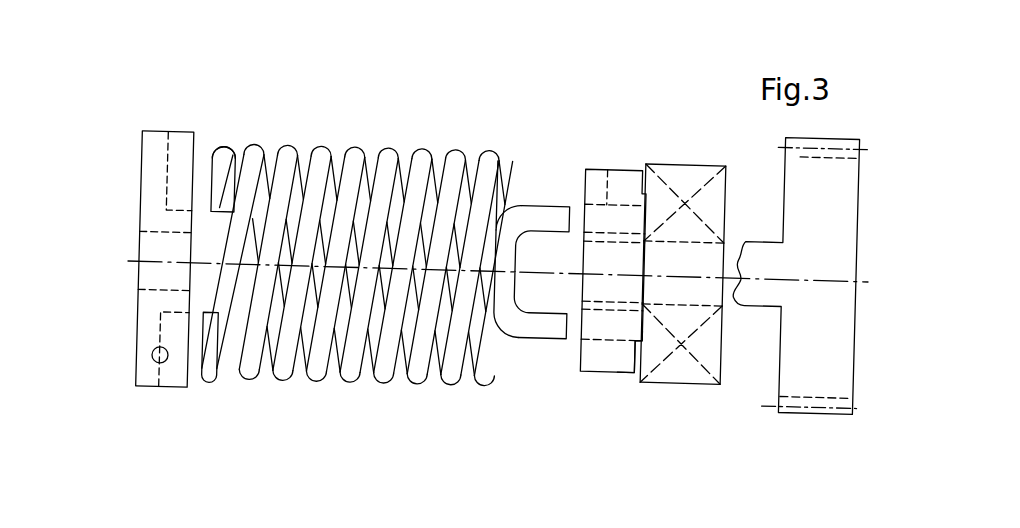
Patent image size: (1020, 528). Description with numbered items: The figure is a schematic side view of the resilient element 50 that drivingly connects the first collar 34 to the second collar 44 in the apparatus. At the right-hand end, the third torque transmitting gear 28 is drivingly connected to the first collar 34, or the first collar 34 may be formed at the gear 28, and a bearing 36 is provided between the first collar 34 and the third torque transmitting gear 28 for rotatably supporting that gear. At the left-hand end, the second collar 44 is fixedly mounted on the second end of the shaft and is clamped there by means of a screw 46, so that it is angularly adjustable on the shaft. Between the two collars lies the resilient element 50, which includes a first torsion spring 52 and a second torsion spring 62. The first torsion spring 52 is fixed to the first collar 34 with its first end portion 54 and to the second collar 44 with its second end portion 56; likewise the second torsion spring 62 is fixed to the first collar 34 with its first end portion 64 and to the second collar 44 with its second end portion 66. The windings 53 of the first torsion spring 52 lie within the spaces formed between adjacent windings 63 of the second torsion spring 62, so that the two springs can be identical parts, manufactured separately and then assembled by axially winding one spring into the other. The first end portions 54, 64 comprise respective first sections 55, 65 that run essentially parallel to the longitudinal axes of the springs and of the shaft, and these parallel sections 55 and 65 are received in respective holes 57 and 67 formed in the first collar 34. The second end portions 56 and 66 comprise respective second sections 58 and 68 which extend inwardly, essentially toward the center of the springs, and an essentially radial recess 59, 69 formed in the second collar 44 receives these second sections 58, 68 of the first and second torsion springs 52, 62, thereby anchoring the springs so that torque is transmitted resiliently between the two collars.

The resilient element 50 is at (387, 80).
The second collar 44 is at (141, 150).
The radial recess 59 is at (180, 160).
The radial recess 69 is at (175, 384).
The screw 46 is at (154, 355).
The second section 58 is at (215, 152).
The second end portion 56 is at (232, 144).
The second end portion 66 is at (207, 381).
The second section 68 is at (218, 378).
The first torsion spring 52 is at (456, 150).
The windings 63 is at (390, 151).
The windings 53 is at (385, 385).
The second torsion spring 62 is at (447, 385).
The first end portion 64 is at (515, 198).
The first section 65 is at (556, 218).
The first section 55 is at (556, 327).
The first end portion 54 is at (514, 338).
The hole 57 is at (600, 335).
The hole 67 is at (604, 169).
The first collar 34 is at (625, 373).
The bearing 36 is at (683, 384).
The third torque transmitting gear 28 is at (808, 383).